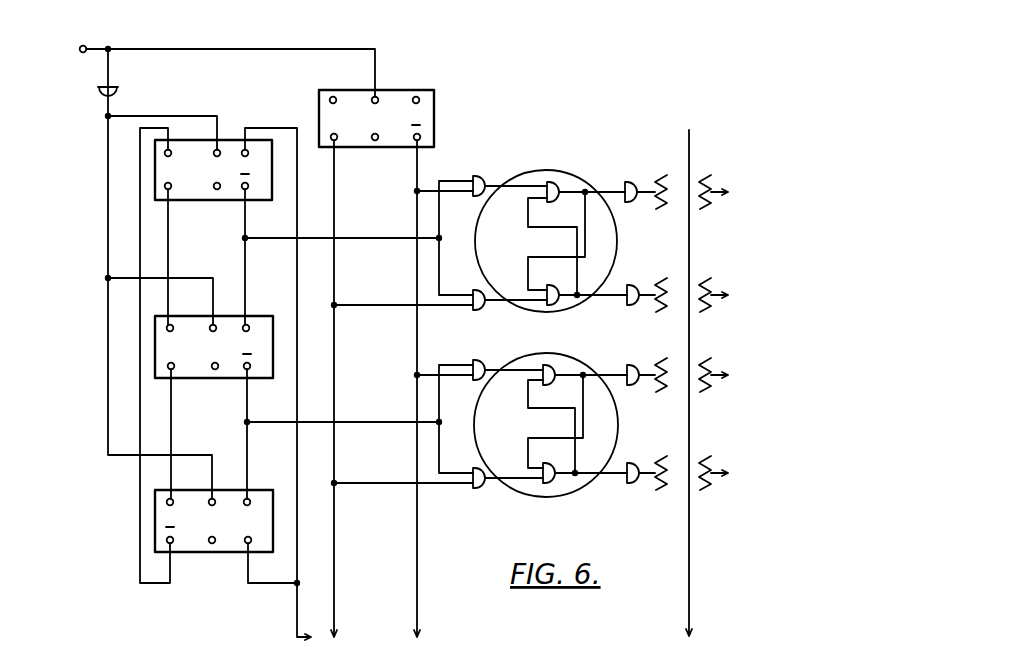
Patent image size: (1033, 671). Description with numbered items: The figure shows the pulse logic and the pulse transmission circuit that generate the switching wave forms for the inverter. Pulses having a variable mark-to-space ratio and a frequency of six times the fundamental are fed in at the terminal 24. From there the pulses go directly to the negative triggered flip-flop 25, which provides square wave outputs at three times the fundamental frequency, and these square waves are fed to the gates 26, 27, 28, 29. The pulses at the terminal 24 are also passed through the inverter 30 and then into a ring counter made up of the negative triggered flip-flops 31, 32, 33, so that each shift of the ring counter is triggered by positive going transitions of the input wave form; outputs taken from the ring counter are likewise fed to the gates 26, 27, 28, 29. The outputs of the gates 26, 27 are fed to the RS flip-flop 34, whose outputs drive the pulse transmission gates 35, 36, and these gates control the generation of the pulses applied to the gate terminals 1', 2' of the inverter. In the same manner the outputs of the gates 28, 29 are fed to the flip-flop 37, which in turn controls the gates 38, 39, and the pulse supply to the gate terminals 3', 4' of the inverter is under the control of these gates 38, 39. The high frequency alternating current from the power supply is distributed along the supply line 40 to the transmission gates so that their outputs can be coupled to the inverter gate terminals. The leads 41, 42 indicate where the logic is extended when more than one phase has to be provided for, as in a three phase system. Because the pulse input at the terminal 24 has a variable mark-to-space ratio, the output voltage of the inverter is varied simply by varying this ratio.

The terminal 24 is at (224, 59).
The inverter 30 is at (117, 89).
The negative triggered flip-flop 31 is at (224, 138).
The negative triggered flip-flop 32 is at (229, 316).
The negative triggered flip-flop 33 is at (220, 489).
The negative triggered flip-flop 25 is at (387, 89).
The gate 26 is at (485, 178).
The gate 27 is at (476, 291).
The gate 28 is at (484, 361).
The gate 29 is at (476, 470).
The RS flip-flop 34 is at (552, 182).
The flip-flop 37 is at (556, 365).
The pulse transmission gate 35 is at (637, 175).
The pulse transmission gate 36 is at (639, 287).
The gate 38 is at (640, 365).
The gate 39 is at (640, 462).
The HF AC power supply line 40 is at (690, 130).
The lead 41 is at (297, 630).
The lead 42 is at (402, 388).
The gate terminal 1' is at (720, 183).
The gate terminal 2' is at (722, 289).
The gate terminal 3' is at (722, 369).
The gate terminal 4' is at (720, 467).